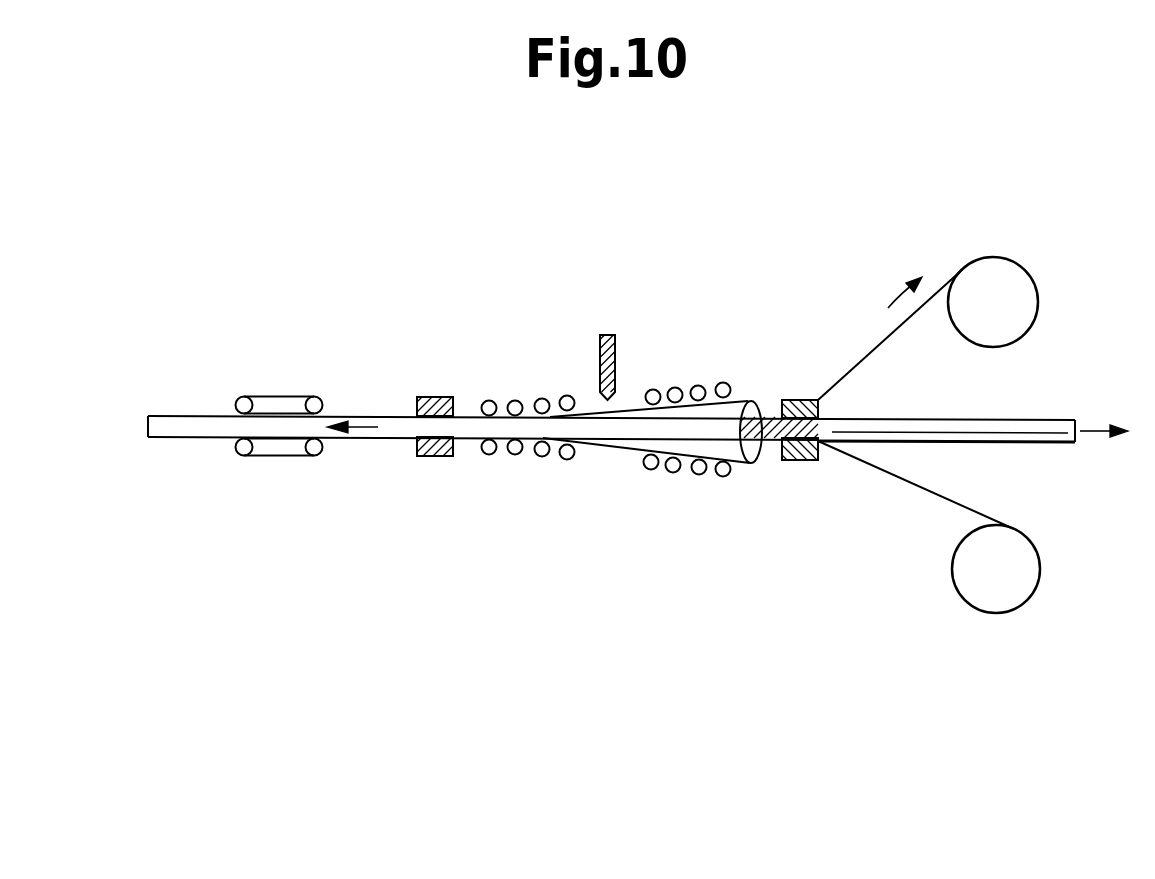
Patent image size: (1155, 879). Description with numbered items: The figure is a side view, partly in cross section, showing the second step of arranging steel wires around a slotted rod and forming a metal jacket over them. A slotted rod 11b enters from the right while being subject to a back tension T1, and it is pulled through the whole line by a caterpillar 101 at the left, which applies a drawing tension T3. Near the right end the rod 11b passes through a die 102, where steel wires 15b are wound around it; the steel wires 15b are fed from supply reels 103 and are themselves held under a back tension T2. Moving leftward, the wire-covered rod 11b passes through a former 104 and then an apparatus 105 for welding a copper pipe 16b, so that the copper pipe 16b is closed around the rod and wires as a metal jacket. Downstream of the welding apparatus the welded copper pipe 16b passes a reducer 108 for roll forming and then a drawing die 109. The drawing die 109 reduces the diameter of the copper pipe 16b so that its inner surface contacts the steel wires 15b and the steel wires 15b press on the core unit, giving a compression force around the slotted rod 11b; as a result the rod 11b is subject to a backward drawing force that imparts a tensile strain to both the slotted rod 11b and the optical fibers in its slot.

The caterpillar 101 is at (297, 407).
The drawing die 109 is at (425, 397).
The reducer 108 is at (515, 400).
The apparatus for welding a copper pipe 105 is at (612, 335).
The former 104 is at (673, 386).
The copper pipe 16b is at (745, 400).
The die 102 is at (793, 460).
The steel wires 15b is at (875, 355).
The roller 103 is at (1033, 324).
The slotted rod 11b is at (1025, 443).
The back tension T1 is at (1095, 431).
The back tension T2 is at (893, 300).
The drawing tension T3 is at (365, 427).